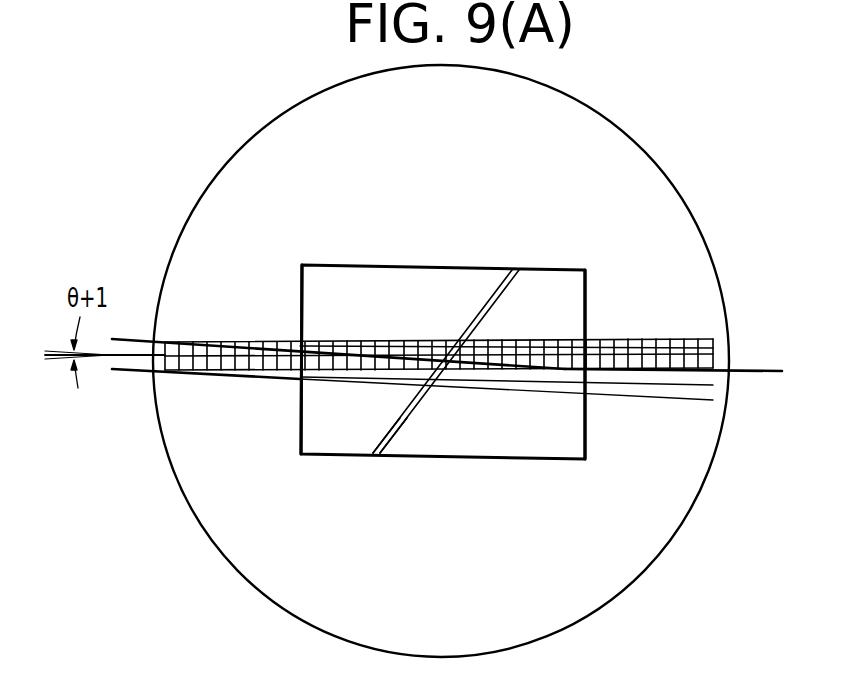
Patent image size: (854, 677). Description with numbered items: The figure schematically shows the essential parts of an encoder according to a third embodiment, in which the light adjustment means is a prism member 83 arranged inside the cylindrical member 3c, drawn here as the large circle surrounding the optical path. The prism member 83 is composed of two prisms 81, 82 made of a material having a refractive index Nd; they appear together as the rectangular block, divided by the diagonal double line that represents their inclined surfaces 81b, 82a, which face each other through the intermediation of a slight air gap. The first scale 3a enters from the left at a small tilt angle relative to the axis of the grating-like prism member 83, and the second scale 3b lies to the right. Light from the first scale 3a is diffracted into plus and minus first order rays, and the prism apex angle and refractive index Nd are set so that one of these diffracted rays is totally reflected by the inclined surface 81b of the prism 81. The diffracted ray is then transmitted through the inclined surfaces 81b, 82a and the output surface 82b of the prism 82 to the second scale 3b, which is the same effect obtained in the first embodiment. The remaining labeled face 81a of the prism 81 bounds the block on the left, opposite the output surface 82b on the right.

The first scale 3a is at (137, 373).
The second scale 3b is at (733, 387).
The cylindrical member 3c is at (681, 192).
The prism 81 is at (403, 283).
The surface of prism 81 81a is at (300, 440).
The inclined surface 81b is at (380, 450).
The prism 82 is at (370, 198).
The inclined surface 82a is at (397, 432).
The output surface 82b is at (585, 436).
The prism member 83 is at (443, 302).